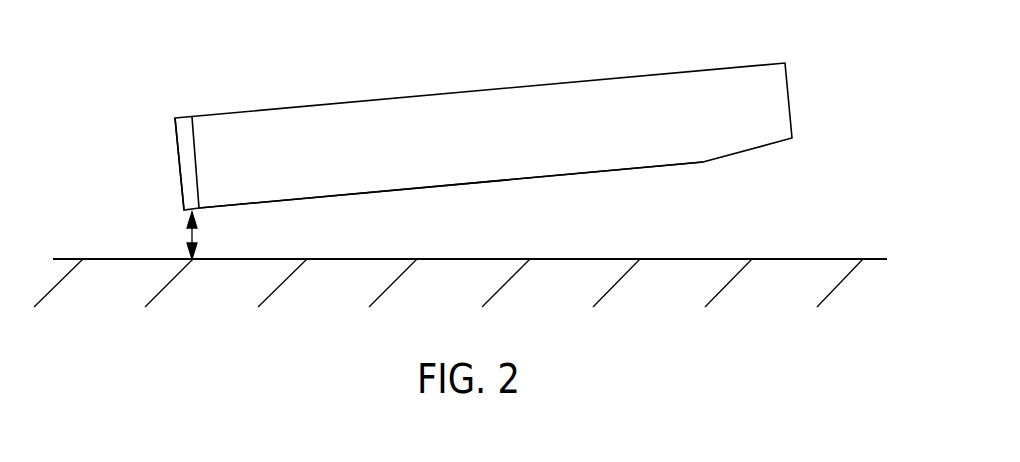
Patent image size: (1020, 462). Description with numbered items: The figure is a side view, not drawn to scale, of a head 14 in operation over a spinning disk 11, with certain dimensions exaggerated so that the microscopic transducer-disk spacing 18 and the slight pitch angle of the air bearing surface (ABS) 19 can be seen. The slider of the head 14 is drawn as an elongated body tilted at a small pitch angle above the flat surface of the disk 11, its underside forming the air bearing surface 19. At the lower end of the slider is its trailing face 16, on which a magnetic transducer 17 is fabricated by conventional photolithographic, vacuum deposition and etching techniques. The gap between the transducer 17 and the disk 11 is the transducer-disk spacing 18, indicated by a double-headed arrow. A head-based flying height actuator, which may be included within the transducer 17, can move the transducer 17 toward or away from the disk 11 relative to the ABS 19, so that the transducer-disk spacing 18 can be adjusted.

The disk 11 is at (833, 258).
The head 14 is at (706, 67).
The trailing face 16 is at (197, 158).
The magnetic transducer 17 is at (178, 167).
The transducer-disk spacing 18 is at (196, 235).
The air bearing surface (ABS) 19 is at (547, 177).